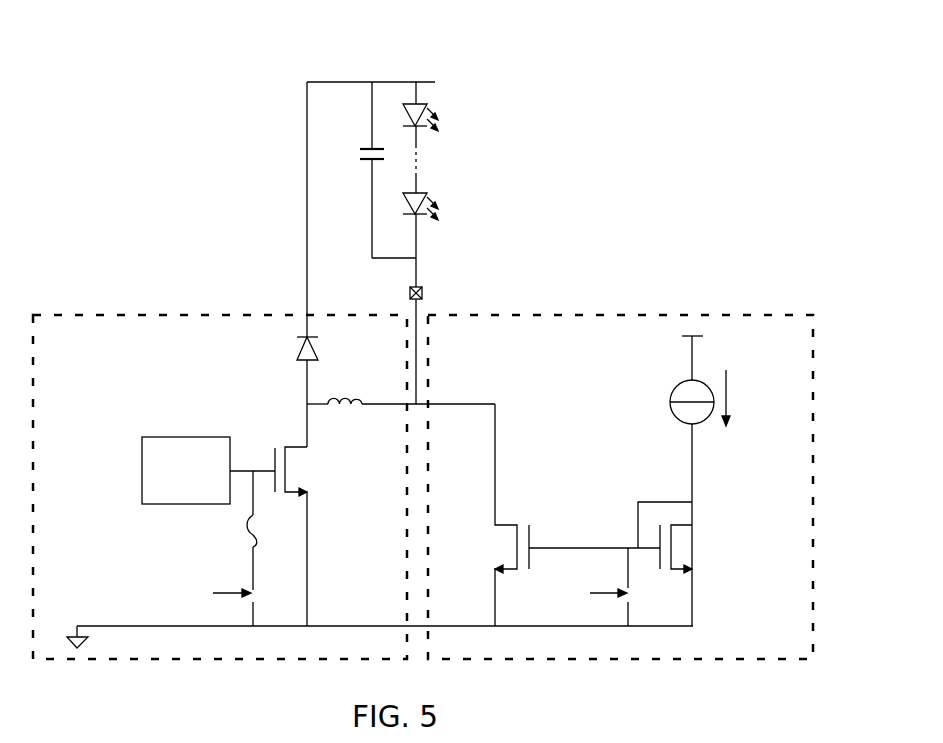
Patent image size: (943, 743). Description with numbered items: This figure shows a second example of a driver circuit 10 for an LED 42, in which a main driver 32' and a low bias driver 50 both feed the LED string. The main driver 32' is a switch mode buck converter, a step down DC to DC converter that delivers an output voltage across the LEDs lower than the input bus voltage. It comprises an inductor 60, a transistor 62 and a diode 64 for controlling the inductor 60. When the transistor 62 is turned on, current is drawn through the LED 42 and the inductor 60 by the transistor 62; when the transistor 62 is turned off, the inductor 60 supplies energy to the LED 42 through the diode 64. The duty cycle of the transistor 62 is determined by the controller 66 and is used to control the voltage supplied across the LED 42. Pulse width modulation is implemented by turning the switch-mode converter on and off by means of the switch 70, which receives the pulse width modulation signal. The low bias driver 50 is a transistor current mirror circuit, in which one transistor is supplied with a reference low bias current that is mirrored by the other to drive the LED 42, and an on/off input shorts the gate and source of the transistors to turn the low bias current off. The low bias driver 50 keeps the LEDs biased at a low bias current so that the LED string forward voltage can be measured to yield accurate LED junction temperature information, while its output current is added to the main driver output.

The LED lighting system 10 is at (658, 169).
The main driver 32' is at (264, 438).
The LED 42 is at (443, 165).
The low bias driver 50 is at (627, 313).
The inductor 60 is at (345, 405).
The transistor 62 is at (295, 470).
The diode 64 is at (300, 359).
The controller 66 is at (187, 437).
The switch 70 is at (250, 590).